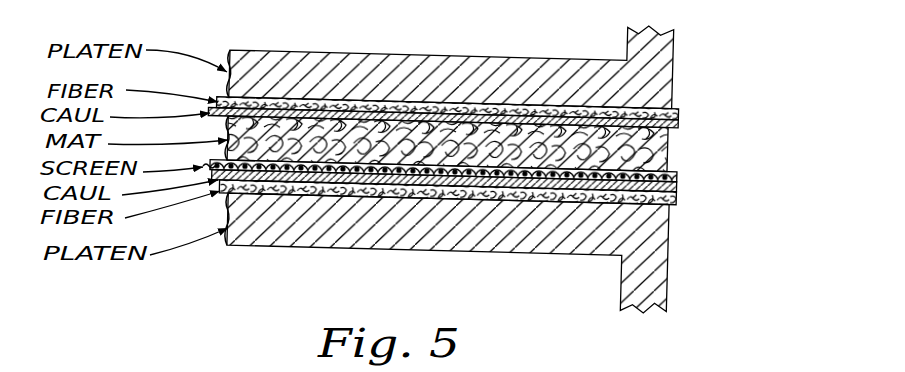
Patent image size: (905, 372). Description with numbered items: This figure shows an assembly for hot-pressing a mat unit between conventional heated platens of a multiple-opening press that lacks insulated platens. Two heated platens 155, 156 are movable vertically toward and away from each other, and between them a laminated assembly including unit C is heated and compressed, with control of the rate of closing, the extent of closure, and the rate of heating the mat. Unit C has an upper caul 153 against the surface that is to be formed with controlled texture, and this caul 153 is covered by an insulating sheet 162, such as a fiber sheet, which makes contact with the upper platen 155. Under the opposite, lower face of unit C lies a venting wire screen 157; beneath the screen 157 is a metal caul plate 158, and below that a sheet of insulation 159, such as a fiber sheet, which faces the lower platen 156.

The heated platen 155 is at (662, 74).
The heated platen 156 is at (652, 237).
The insulating sheet 162 is at (677, 112).
The caul 153 is at (678, 127).
The unit C is at (674, 150).
The venting wire screen 157 is at (677, 173).
The metal caul plate 158 is at (682, 190).
The sheet of insulation 159 is at (680, 200).